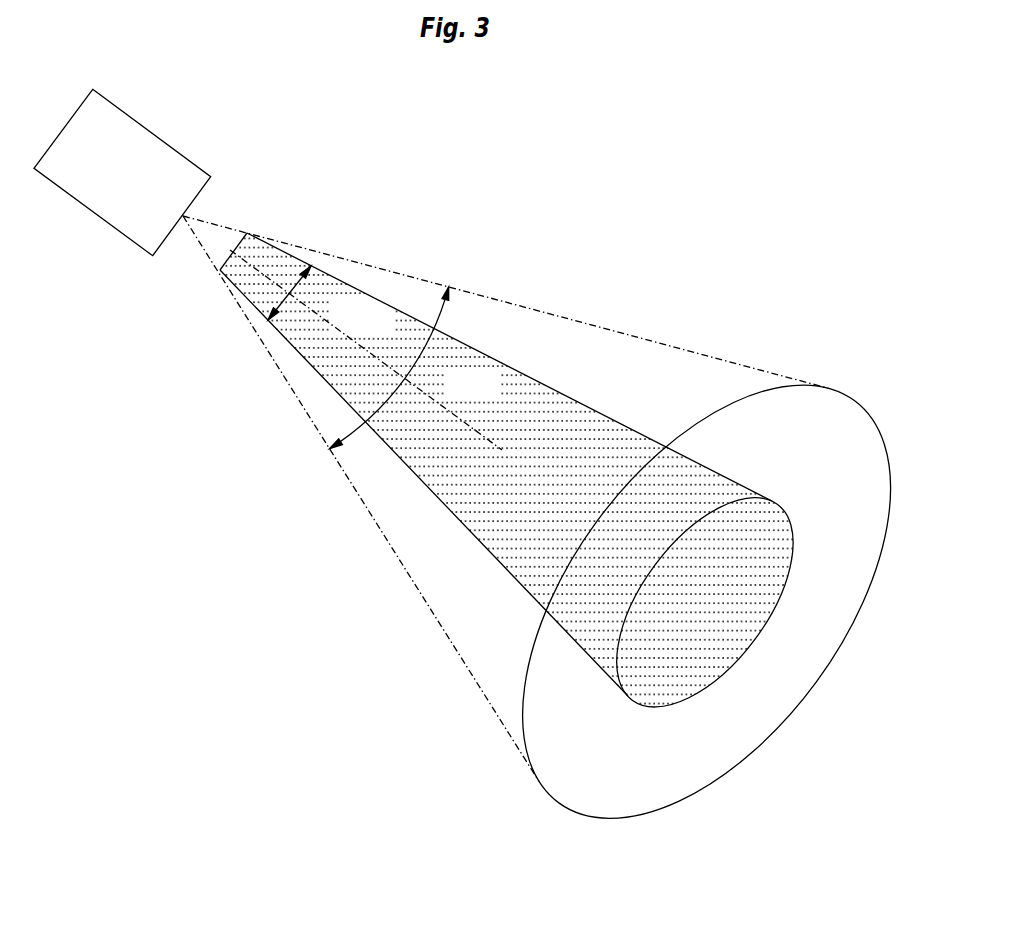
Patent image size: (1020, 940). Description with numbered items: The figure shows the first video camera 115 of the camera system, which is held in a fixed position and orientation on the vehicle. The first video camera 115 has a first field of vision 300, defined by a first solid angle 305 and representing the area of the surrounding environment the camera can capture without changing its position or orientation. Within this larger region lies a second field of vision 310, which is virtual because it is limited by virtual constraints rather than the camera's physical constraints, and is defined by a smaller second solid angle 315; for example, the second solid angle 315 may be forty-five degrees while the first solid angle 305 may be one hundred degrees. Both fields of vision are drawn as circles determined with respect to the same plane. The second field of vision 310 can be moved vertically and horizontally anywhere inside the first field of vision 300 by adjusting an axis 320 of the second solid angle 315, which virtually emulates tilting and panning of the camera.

The first video camera 115 is at (143, 125).
The first field of vision 300 is at (708, 782).
The first solid angle 305 is at (422, 360).
The second field of vision 310 is at (745, 653).
The second solid angle 315 is at (310, 295).
The axis 320 is at (405, 450).